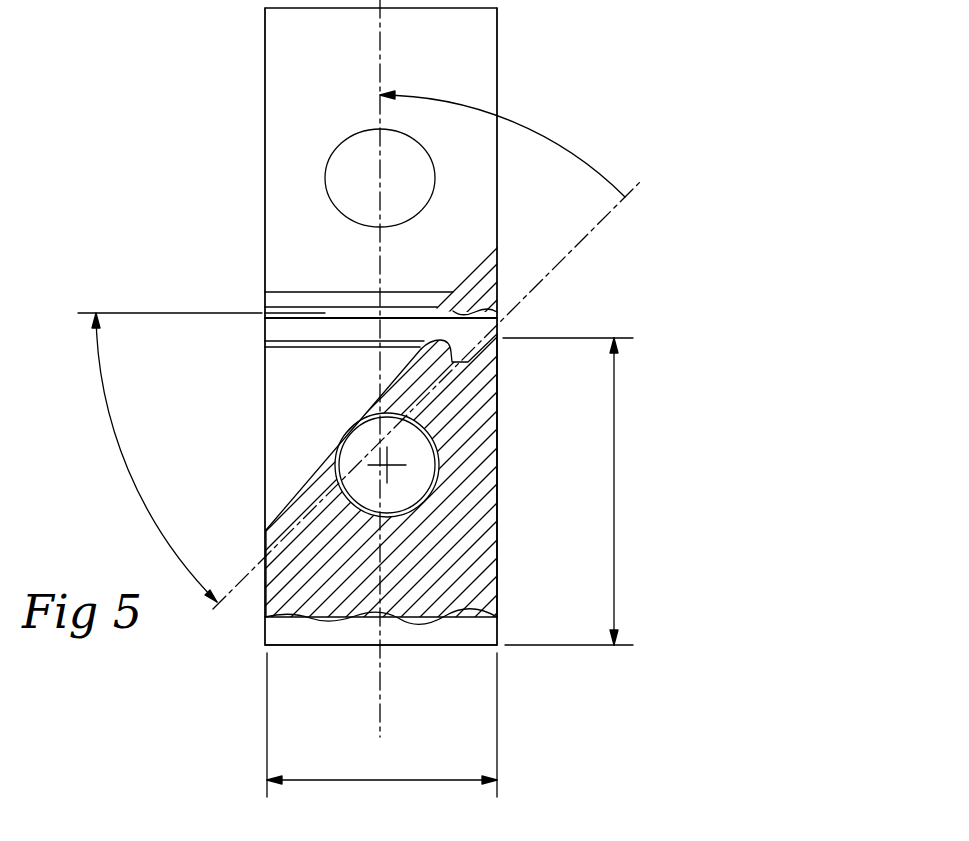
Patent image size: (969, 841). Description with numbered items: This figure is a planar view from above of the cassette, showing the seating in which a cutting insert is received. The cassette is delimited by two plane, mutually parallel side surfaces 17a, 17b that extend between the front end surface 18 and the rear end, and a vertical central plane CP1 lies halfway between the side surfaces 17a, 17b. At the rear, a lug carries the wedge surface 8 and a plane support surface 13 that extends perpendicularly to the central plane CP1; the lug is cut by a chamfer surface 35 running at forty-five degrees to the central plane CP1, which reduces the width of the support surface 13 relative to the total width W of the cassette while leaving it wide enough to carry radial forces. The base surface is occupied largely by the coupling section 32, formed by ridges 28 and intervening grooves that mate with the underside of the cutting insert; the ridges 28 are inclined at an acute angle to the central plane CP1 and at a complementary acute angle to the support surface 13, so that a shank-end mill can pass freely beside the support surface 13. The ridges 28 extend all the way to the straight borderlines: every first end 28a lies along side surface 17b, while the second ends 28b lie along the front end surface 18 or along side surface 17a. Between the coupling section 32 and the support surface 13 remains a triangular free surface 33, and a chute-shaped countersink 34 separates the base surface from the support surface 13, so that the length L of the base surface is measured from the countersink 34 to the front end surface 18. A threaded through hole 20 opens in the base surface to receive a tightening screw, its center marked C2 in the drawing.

The wedge surface 8 is at (306, 68).
The support surface 13 is at (323, 316).
The side surface 17a is at (265, 173).
The side surface 17b is at (497, 38).
The front end surface 18 is at (482, 633).
The hole 20 is at (355, 446).
The ridge 28 is at (446, 375).
The first end of ridge 28a is at (497, 445).
The second end of ridge 28b is at (266, 557).
The coupling section 32 is at (285, 493).
The free surface 33 is at (327, 402).
The countersink 34 is at (278, 330).
The chamfer surface 35 is at (468, 278).
The bore center C2 is at (392, 466).
The central plane CP1 is at (383, 724).
The length of base surface L is at (570, 491).
The width of cassette W is at (382, 725).